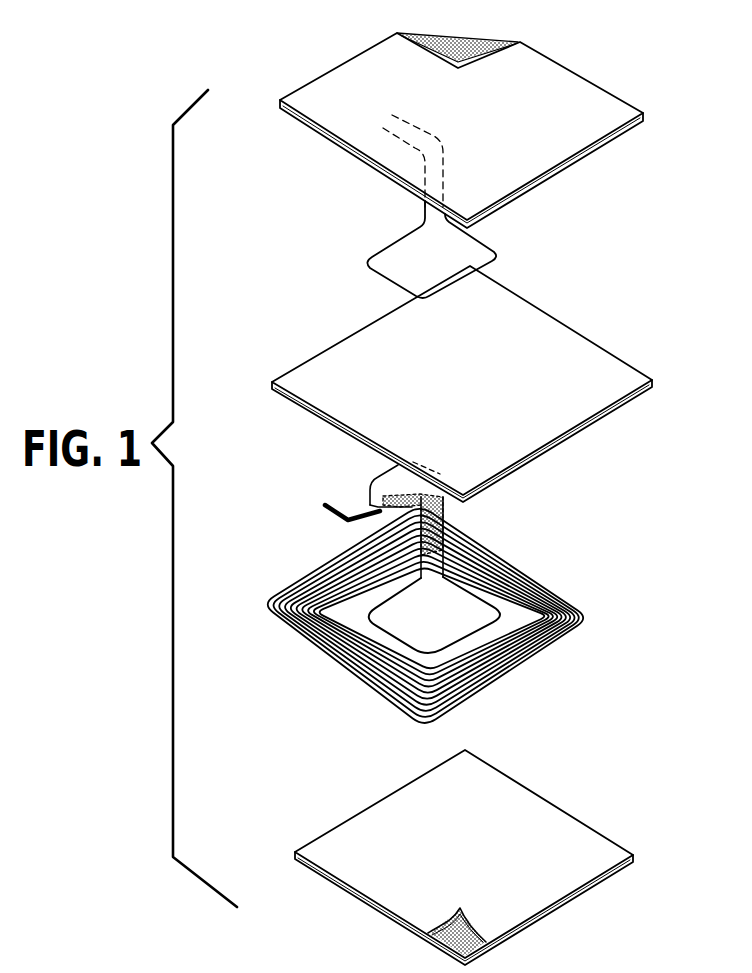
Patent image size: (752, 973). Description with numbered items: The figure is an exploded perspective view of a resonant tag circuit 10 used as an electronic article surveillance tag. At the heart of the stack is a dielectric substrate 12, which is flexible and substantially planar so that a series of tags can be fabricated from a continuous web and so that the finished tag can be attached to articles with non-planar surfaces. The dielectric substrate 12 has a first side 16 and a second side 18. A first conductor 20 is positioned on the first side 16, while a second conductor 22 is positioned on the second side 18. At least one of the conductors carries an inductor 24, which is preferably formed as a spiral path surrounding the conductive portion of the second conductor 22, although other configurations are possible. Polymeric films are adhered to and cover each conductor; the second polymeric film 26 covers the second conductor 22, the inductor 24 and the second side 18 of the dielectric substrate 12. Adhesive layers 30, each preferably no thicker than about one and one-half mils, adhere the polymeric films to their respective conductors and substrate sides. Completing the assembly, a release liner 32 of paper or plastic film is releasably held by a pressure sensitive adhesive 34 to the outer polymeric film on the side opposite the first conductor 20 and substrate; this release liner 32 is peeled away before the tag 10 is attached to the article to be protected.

The resonant tag circuit 10 is at (582, 507).
The dielectric substrate 12 is at (627, 362).
The first side 16 is at (565, 347).
The second side 18 is at (595, 420).
The first conductor 20 is at (466, 254).
The second conductor 22 is at (466, 610).
The inductor 24 is at (588, 623).
The second polymeric film 26 is at (470, 948).
The adhesive layers 30 is at (553, 834).
The release liner 32 is at (575, 103).
The pressure sensitive adhesive 34 is at (462, 33).